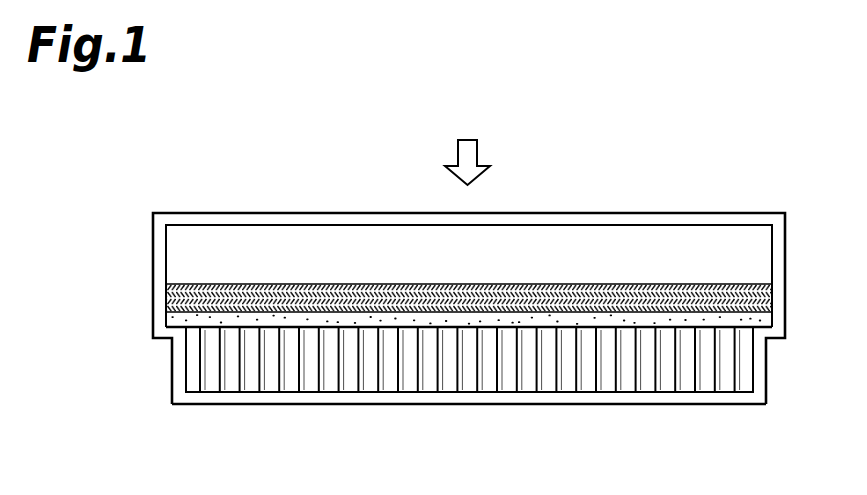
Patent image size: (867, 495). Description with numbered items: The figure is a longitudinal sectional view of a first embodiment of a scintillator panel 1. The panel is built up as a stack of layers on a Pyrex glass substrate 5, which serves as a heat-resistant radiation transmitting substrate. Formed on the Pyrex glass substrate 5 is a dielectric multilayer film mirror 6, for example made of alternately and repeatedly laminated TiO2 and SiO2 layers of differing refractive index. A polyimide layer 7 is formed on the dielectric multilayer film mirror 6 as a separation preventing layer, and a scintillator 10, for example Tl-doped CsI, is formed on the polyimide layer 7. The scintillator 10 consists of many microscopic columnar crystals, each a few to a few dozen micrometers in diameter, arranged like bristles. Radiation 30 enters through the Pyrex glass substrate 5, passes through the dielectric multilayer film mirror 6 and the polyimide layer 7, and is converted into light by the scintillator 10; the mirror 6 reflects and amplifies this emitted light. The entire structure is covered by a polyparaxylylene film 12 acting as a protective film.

The scintillator panel 1 is at (768, 165).
The Pyrex glass substrate 5 is at (760, 257).
The dielectric multilayer film mirror 6 is at (775, 284).
The polyimide layer 7 is at (762, 322).
The scintillator 10 is at (742, 367).
The polyparaxylylene film 12 is at (689, 403).
The radiation 30 is at (467, 144).